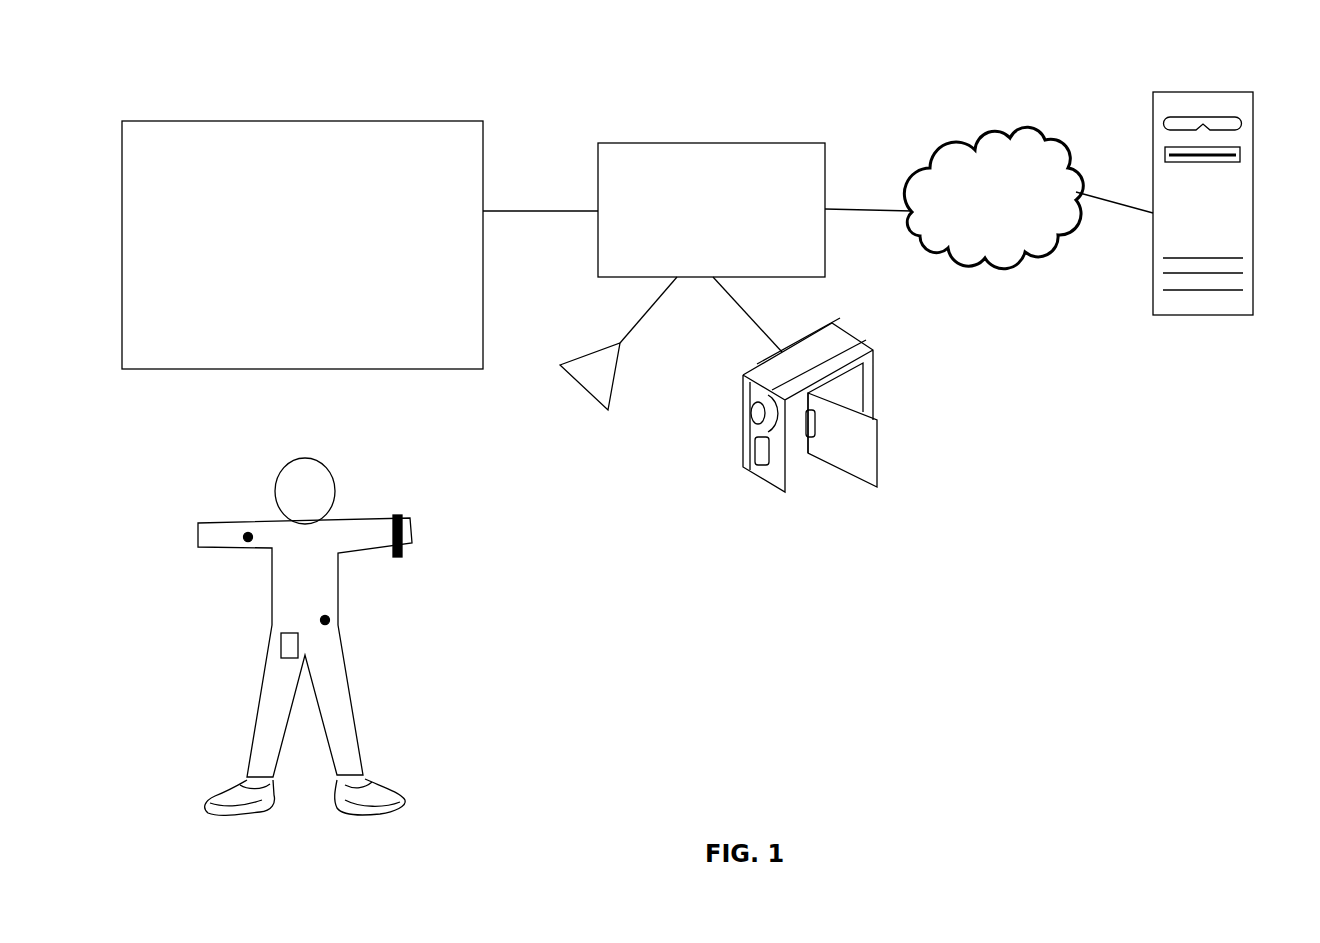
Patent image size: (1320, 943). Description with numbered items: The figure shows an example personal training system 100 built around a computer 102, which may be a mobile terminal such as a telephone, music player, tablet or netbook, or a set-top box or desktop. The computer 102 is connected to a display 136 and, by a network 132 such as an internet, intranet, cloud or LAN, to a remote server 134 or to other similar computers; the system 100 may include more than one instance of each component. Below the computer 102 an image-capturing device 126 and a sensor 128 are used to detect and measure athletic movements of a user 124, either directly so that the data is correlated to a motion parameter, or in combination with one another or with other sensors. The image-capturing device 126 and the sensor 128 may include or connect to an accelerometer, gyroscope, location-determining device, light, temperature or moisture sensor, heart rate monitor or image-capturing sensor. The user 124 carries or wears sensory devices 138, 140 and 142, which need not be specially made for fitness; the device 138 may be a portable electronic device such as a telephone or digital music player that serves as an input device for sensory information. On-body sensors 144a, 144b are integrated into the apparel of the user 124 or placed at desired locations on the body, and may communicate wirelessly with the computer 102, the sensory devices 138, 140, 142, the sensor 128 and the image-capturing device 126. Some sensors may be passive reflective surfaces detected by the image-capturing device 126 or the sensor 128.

The personal training system 100 is at (729, 50).
The computer 102 is at (727, 233).
The user 124 is at (270, 483).
The image-capturing device 126 is at (878, 352).
The sensor 128 is at (580, 353).
The network 132 is at (1006, 231).
The remote server 134 is at (1142, 307).
The display 136 is at (318, 267).
The sensory device 138 is at (270, 648).
The sensory device 140 is at (222, 780).
The sensory device 142 is at (403, 512).
The on-body sensor 144a is at (244, 542).
The on-body sensor 144b is at (331, 624).